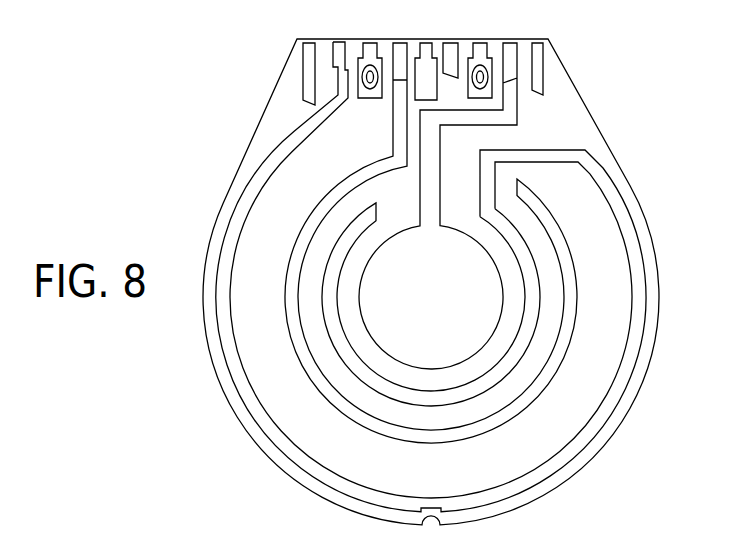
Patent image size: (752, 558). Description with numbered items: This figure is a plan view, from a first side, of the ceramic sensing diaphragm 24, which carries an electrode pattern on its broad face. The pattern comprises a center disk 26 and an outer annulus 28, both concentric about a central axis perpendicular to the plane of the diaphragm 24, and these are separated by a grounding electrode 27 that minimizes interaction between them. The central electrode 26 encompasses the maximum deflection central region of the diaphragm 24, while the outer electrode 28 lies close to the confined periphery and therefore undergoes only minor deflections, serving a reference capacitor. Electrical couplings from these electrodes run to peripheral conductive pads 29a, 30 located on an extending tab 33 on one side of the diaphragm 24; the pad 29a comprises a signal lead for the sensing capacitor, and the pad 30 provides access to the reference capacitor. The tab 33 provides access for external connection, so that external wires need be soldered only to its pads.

The sensing diaphragm 24 is at (565, 377).
The center disk 26 is at (493, 288).
The grounding electrode 27 is at (533, 297).
The outer annulus 28 is at (560, 228).
The conductive pad 29a is at (510, 43).
The conductive pad 30 is at (397, 47).
The extending tab 33 is at (553, 55).